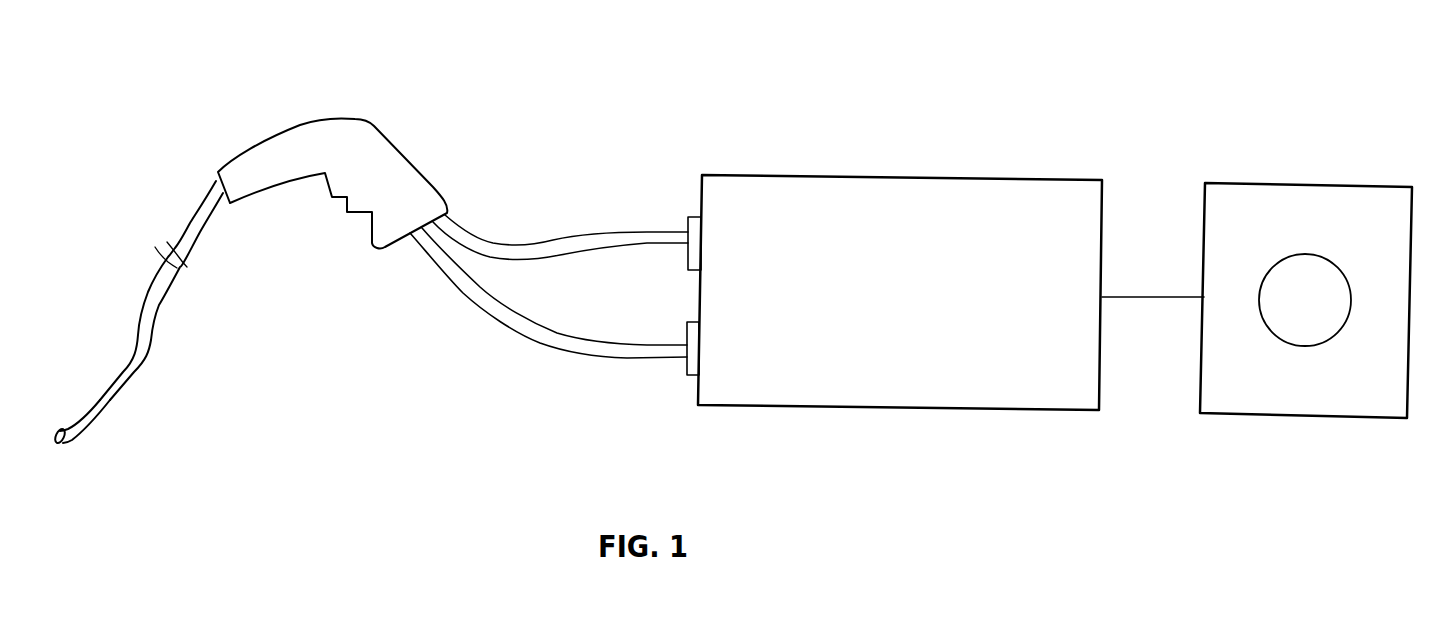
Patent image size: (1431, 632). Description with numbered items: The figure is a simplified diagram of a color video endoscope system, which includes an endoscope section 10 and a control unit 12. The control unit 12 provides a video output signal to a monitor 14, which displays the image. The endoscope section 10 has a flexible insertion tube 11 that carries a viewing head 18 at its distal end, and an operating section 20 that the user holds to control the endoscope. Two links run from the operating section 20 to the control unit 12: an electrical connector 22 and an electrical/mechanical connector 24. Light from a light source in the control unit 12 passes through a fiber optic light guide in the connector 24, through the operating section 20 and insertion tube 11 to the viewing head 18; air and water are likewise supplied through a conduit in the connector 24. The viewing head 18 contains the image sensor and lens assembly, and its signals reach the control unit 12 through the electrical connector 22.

The endoscope section 10 is at (313, 82).
The probe shaft 11 is at (142, 335).
The control unit 12 is at (878, 236).
The monitor 14 is at (1315, 223).
The viewing head 18 is at (92, 422).
The operating section 20 is at (363, 132).
The electrical connector 22 is at (573, 347).
The electrical/mechanical connector 24 is at (533, 248).